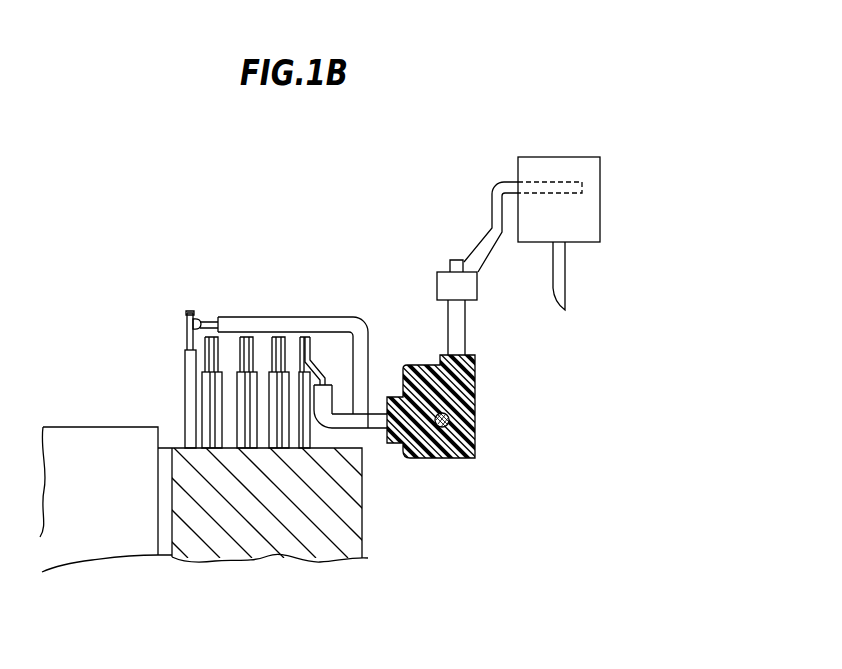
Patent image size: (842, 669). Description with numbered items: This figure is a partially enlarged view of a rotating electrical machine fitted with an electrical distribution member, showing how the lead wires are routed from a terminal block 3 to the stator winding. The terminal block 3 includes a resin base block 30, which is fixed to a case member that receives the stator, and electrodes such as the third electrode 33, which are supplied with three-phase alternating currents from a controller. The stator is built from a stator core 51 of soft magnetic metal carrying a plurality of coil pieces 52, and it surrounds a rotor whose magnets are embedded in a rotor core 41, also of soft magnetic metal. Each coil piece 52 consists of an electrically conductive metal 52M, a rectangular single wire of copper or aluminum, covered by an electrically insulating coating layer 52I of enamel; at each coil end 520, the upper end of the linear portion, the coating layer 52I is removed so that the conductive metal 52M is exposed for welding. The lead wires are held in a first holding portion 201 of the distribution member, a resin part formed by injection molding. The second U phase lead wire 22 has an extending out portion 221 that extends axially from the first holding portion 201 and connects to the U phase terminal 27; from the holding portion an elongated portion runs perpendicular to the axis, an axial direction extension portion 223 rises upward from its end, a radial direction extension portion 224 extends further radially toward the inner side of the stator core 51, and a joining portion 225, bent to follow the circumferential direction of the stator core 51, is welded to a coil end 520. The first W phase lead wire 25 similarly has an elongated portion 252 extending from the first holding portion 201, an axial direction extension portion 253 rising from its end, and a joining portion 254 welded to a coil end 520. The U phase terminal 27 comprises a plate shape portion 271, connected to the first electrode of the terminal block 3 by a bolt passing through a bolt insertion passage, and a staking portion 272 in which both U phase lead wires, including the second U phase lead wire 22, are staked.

The terminal block 3 is at (612, 148).
The second U phase lead wire 22 is at (240, 308).
The first W phase lead wire 25 is at (365, 435).
The U phase terminal 27 is at (487, 178).
The base block 30 is at (602, 215).
The third electrode 33 is at (565, 277).
The rotor core 41 is at (82, 427).
The stator core 51 is at (232, 548).
The coil pieces 52 is at (212, 423).
The coating layer 52I is at (185, 355).
The electrically conductive metal 52M is at (187, 332).
The first holding portion 201 is at (467, 413).
The extending out portion 221 is at (458, 330).
The axial direction extension portion 223 is at (360, 350).
The radial direction extension portion 224 is at (270, 325).
The joining portion 225 is at (198, 317).
The elongated portion 252 is at (372, 416).
The axial direction extension portion 253 is at (323, 407).
The joining portion 254 is at (309, 337).
The plate shape portion 271 is at (543, 182).
The staking portion 272 is at (443, 282).
The coil end 520 is at (189, 312).